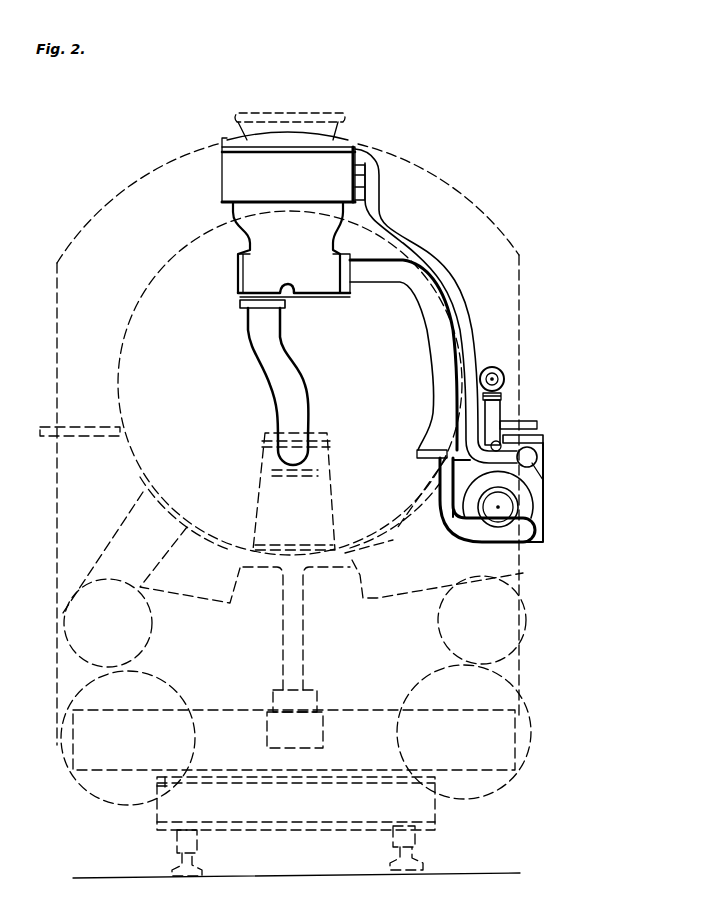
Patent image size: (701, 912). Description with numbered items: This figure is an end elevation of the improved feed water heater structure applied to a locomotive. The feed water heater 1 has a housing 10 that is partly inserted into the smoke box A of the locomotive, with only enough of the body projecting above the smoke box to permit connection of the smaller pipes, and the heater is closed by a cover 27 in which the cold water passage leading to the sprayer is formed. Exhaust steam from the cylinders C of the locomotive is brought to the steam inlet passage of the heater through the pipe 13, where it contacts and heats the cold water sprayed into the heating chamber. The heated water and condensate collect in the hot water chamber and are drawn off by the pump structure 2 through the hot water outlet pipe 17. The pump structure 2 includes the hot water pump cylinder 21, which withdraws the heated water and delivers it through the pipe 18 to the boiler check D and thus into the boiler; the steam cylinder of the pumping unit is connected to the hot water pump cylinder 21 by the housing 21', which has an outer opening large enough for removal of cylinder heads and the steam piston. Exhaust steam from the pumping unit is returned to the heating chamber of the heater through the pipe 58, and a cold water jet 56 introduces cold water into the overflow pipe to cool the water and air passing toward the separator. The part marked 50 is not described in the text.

The smoke box A is at (281, 510).
The cylinders C is at (148, 633).
The boiler check D is at (505, 379).
The feed water heater 1 is at (244, 217).
The pump structure 2 is at (536, 487).
The housing 10 is at (228, 180).
The pipe 13 is at (283, 350).
The hot water outlet pipe 17 is at (442, 349).
The pipe 18 is at (500, 414).
The hot water pump cylinder 21 is at (532, 507).
The housing 21' is at (541, 494).
The cover 27 is at (332, 138).
The pipe fitting 50 is at (362, 187).
The cold water jet 56 is at (540, 440).
The pipe 58 is at (372, 172).